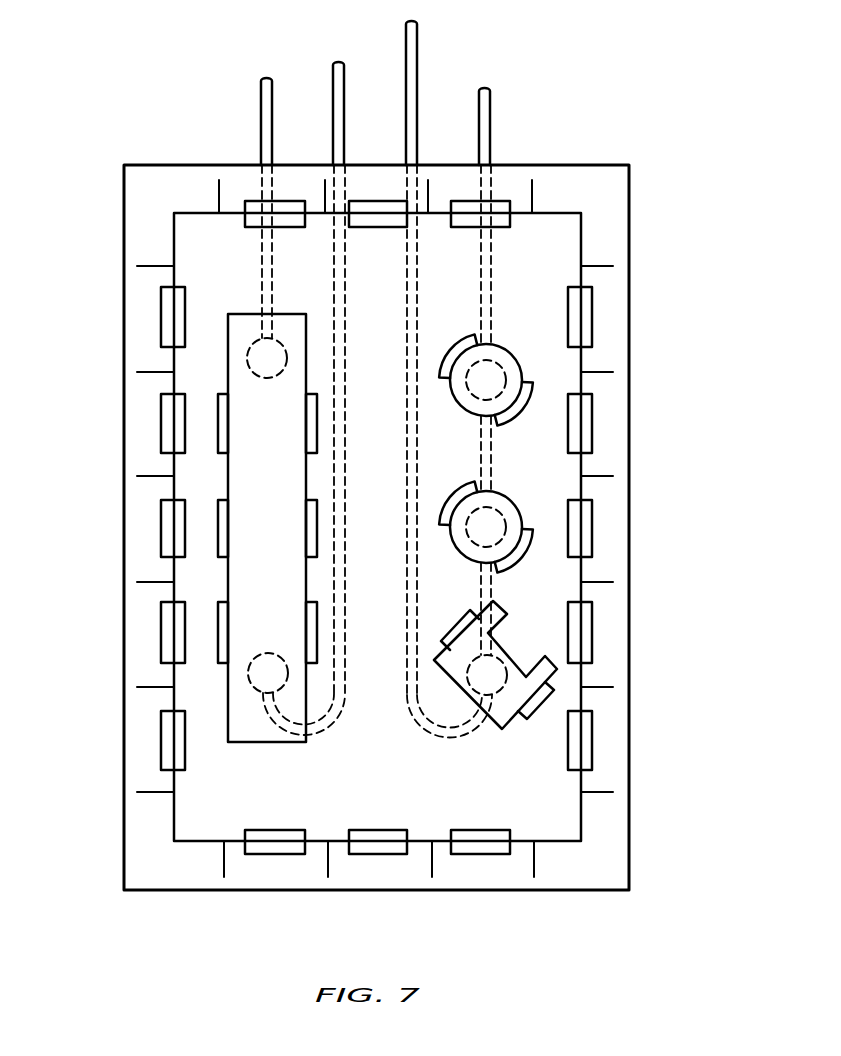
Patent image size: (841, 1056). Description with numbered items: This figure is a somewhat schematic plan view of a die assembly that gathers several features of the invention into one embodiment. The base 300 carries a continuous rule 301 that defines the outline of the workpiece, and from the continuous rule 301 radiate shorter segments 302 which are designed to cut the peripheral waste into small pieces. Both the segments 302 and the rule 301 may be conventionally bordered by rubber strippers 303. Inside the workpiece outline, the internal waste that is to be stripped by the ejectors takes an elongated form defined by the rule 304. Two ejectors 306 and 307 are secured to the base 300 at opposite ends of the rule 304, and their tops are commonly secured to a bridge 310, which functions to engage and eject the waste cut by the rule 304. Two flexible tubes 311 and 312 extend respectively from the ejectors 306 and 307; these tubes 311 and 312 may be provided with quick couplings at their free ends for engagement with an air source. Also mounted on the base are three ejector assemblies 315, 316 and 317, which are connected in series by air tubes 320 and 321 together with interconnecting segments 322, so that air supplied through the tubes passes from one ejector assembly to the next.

The base 300 is at (630, 770).
The continuous rule 301 is at (583, 830).
The segments 302 is at (152, 687).
The rubber strippers 303 is at (163, 738).
The rule 304 is at (232, 590).
The ejector 306 is at (255, 342).
The ejector 307 is at (274, 653).
The bridge 310 is at (280, 461).
The flexible tube 311 is at (262, 97).
The flexible tube 312 is at (334, 85).
The ejector assembly 315 is at (510, 658).
The ejector assembly 316 is at (512, 357).
The ejector assembly 317 is at (512, 503).
The air tube 320 is at (418, 58).
The air tube 321 is at (490, 110).
The interconnecting segments 322 is at (481, 465).